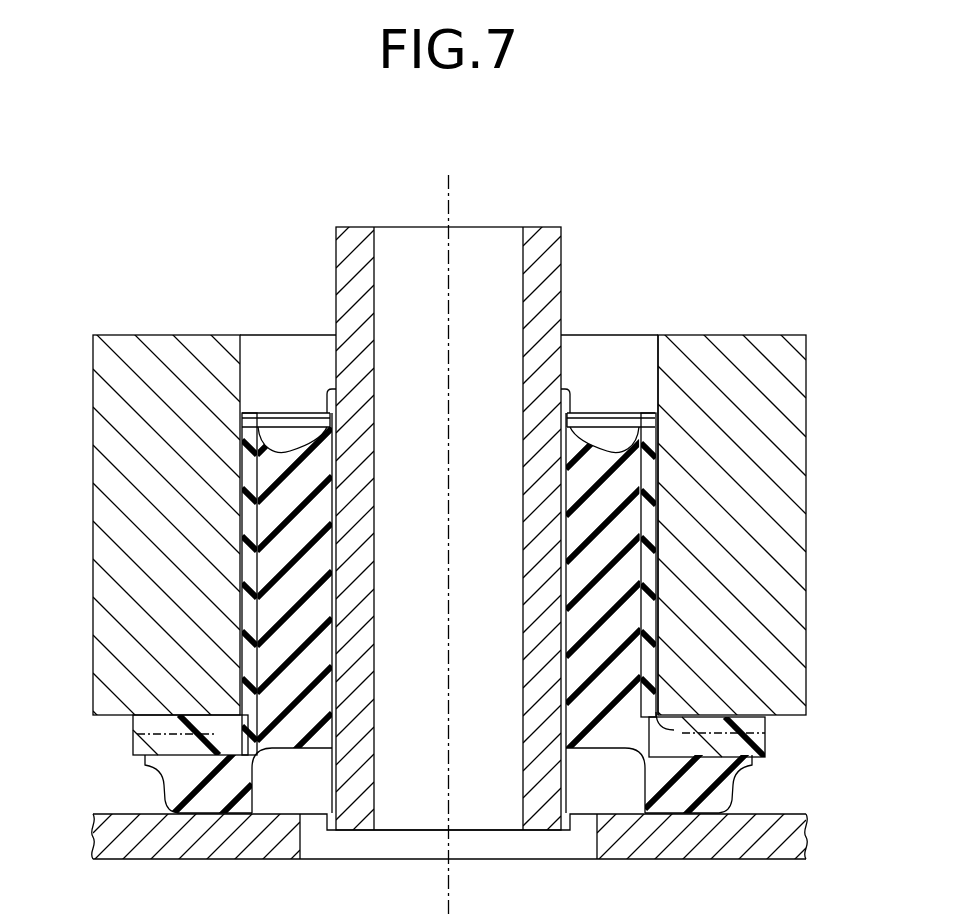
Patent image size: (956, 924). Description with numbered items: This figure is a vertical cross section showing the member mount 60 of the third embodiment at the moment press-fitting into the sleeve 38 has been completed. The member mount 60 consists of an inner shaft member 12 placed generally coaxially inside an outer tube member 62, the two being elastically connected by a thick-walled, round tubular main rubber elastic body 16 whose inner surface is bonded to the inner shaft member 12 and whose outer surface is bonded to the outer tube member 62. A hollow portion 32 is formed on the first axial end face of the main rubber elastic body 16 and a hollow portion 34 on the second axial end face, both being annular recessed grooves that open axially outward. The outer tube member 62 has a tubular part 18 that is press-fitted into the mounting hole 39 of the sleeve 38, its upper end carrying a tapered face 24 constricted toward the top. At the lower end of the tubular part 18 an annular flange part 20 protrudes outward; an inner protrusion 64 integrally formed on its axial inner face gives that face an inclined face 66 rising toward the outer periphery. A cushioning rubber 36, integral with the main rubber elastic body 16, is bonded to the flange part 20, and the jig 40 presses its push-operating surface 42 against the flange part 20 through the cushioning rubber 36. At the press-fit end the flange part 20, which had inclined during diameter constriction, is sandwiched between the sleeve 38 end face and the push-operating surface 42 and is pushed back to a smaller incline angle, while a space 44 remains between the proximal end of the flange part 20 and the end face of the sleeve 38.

The inner shaft member 12 is at (574, 281).
The main rubber elastic body 16 is at (598, 583).
The tubular part 18 is at (250, 608).
The flange part 20 is at (192, 745).
The tapered face 24 is at (248, 421).
The hollow portion 32 is at (598, 443).
The hollow portion 34 is at (575, 748).
The cushioning rubber 36 is at (720, 783).
The sleeve 38 is at (752, 368).
The mounting hole 39 is at (658, 358).
The jig 40 is at (140, 835).
The push-operating surface 42 is at (210, 808).
The space 44 is at (687, 713).
The member mount 60 is at (301, 385).
The outer tube member 62 is at (780, 743).
The inner protrusion 64 is at (145, 725).
The inclined face 66 is at (183, 724).